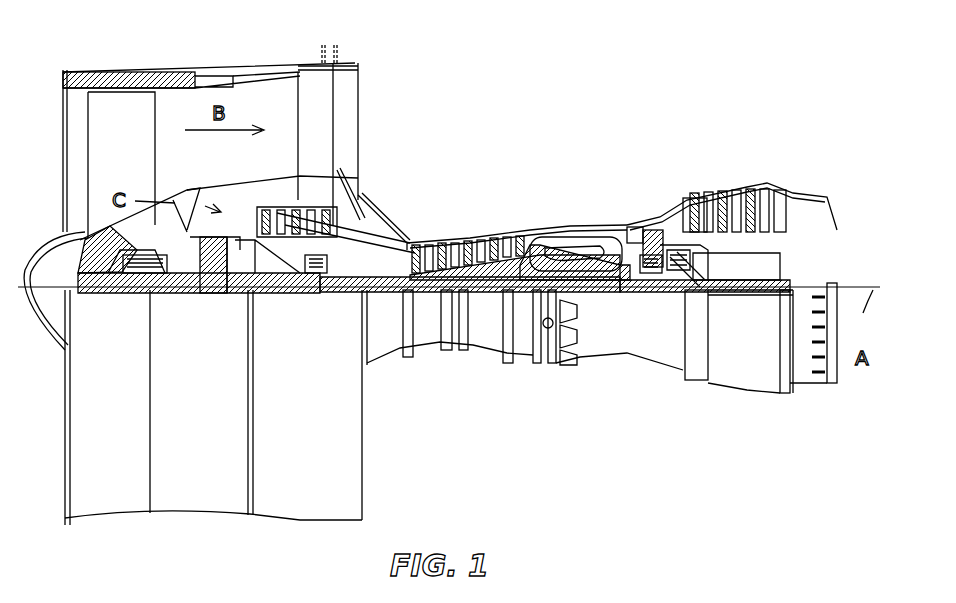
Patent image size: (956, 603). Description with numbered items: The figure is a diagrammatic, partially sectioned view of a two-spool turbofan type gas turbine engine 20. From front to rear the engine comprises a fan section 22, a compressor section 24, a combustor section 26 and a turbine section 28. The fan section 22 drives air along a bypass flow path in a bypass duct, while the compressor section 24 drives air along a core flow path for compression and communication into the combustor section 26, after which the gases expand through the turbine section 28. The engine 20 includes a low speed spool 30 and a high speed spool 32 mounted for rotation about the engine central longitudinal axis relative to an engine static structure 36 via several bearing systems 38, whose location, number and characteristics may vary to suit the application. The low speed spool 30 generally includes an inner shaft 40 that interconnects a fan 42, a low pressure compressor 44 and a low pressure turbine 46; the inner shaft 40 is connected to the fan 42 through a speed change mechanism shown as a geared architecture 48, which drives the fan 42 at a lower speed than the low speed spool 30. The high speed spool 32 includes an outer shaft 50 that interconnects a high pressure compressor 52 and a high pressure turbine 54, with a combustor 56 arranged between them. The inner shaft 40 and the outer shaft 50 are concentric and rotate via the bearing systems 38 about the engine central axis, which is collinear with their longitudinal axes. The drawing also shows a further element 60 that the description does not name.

The gas turbine engine 20 is at (676, 107).
The fan section 22 is at (237, 52).
The compressor section 24 is at (573, 153).
The combustor section 26 is at (655, 153).
The turbine section 28 is at (795, 153).
The low speed spool 30 is at (491, 308).
The high speed spool 32 is at (515, 237).
The engine static structure 36 is at (525, 373).
The bearing systems 38 is at (130, 293).
The inner shaft 40 is at (370, 293).
The fan 42 is at (121, 165).
The low pressure compressor 44 is at (345, 205).
The low pressure turbine 46 is at (737, 190).
The geared architecture 48 is at (217, 283).
The outer shaft 50 is at (593, 293).
The high pressure compressor 52 is at (468, 253).
The high pressure turbine 54 is at (630, 243).
The combustor 56 is at (583, 245).
The mid-turbine frame 60 is at (675, 263).